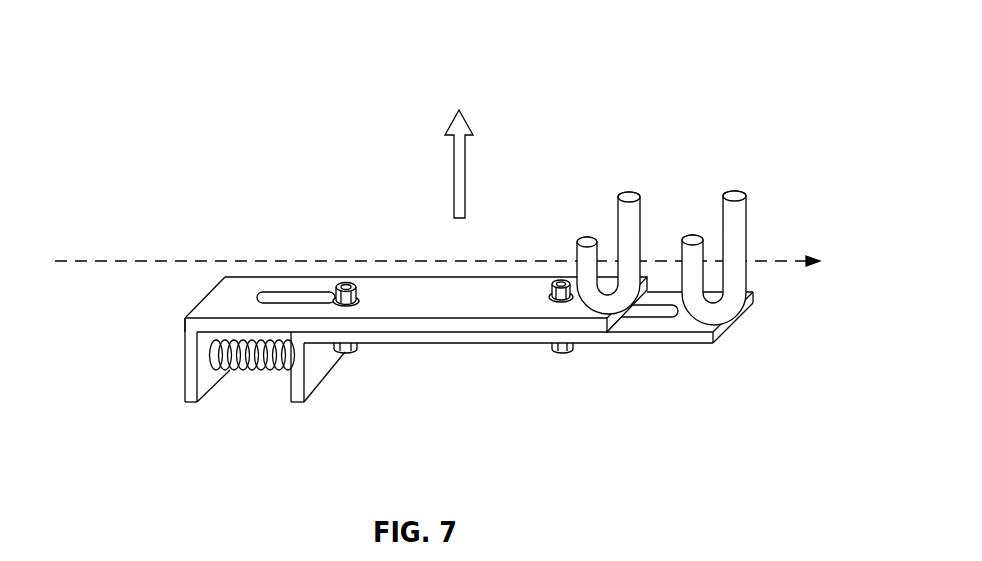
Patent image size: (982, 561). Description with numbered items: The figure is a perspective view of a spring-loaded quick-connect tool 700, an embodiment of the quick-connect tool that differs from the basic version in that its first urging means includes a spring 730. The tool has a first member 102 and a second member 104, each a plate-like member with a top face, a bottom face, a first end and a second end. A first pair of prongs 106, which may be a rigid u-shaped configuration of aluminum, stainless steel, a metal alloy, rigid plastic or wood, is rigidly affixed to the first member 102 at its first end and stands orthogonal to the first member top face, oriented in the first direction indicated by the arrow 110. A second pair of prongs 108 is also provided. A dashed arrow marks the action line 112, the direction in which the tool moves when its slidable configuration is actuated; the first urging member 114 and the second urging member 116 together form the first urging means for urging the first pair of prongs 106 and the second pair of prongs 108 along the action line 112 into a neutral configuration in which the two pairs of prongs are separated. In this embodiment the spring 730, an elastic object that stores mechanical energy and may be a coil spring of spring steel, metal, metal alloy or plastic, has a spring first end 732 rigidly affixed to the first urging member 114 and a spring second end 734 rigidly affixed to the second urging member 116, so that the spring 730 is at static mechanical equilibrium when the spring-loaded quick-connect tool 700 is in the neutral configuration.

The spring-loaded quick-connect tool 700 is at (798, 41).
The first member 102 is at (422, 325).
The second member 104 is at (657, 337).
The first pair of prongs 106 is at (640, 208).
The second pair of prongs 108 is at (748, 210).
The arrow 110 is at (465, 179).
The action line 112 is at (120, 261).
The first urging member 114 is at (185, 373).
The second urging member 116 is at (318, 377).
The spring 730 is at (276, 418).
The spring first end 732 is at (230, 370).
The spring second end 734 is at (280, 370).